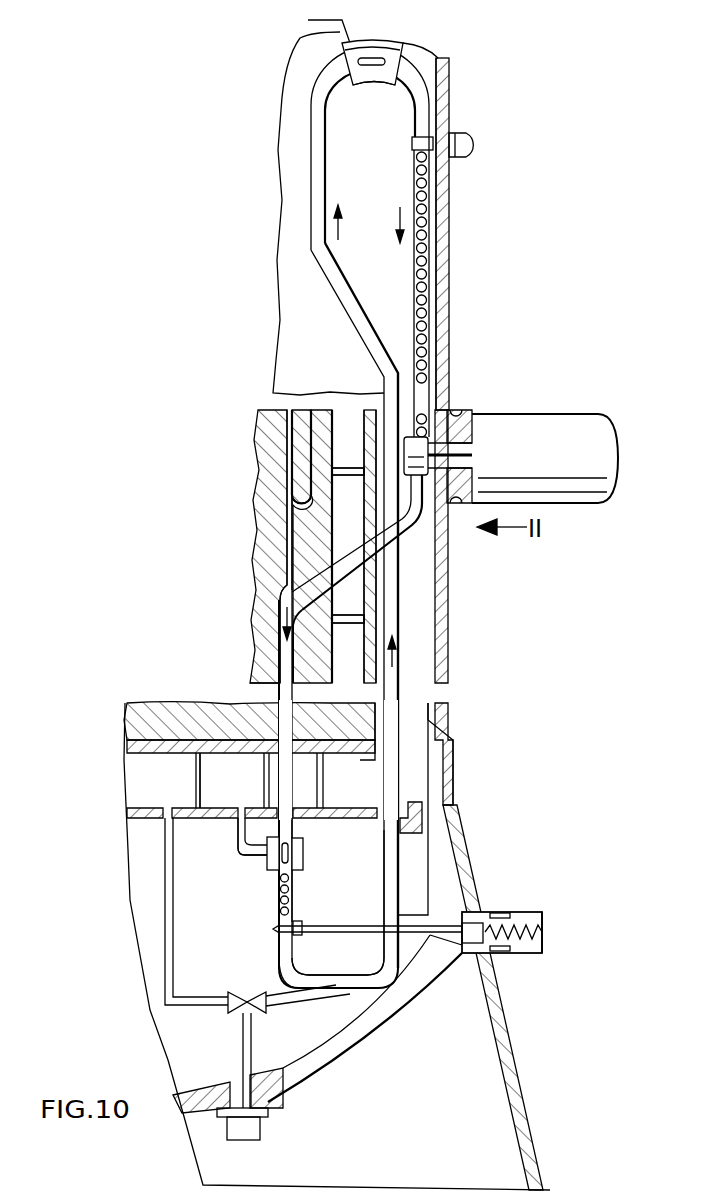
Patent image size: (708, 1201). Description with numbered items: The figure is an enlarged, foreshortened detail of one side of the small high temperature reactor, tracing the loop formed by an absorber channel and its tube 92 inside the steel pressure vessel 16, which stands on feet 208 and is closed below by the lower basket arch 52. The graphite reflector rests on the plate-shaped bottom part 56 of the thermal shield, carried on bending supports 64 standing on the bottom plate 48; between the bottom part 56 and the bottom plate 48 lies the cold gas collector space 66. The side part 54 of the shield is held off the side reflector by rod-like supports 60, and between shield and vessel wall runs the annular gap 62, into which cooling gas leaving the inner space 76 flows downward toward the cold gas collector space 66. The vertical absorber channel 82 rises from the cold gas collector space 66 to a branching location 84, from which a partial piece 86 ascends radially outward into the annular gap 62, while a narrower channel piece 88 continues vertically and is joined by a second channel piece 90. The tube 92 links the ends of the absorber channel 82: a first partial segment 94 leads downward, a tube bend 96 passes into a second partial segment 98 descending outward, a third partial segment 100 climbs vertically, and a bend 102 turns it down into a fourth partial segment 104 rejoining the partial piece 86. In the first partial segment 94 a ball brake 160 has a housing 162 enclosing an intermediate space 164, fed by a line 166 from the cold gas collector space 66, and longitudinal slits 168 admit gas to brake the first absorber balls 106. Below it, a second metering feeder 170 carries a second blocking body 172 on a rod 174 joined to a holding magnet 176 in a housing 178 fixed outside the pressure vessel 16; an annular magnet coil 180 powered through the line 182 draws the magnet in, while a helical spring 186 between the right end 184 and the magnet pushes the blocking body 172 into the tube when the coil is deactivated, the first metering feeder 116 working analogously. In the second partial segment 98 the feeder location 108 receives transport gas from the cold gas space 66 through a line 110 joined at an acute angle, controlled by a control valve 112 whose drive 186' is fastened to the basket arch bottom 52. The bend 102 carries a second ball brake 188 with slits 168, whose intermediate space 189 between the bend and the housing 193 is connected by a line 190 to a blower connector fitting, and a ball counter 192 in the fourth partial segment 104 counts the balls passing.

The pressure vessel 16 is at (450, 196).
The bottom plate 48 is at (127, 813).
The lower basket arch 52 is at (322, 1068).
The side part of the thermal shield 54 is at (365, 530).
The bottom part of the thermal shield 56 is at (128, 745).
The rod-like supports 60 is at (350, 626).
The annular gap 62 is at (448, 635).
The bending supports 64 is at (200, 778).
The cold gas collector space 66 is at (166, 794).
The inner space of the pressure vessel 76 is at (319, 346).
The absorber channel 82 is at (272, 658).
The branching location 84 is at (280, 605).
The partial piece of the absorber channel 86 is at (412, 560).
The channel piece 88 is at (262, 553).
The second channel piece 90 is at (310, 437).
The tube 92 is at (400, 778).
The first partial segment 94 is at (291, 830).
The tube bend 96 is at (280, 968).
The second partial segment 98 is at (313, 975).
The third partial segment 100 is at (313, 160).
The bend 102 is at (327, 83).
The fourth partial segment 104 is at (413, 158).
The first absorber balls 106 is at (280, 900).
The feeder location 108 is at (320, 1000).
The line 110 is at (165, 855).
The control valve 112 is at (235, 1012).
The metering feeder 116 is at (533, 415).
The ball brake 160 is at (296, 874).
The housing 162 is at (303, 858).
The intermediate space 164 is at (276, 862).
The line 166 is at (237, 836).
The slits 168 is at (381, 67).
The second metering feeder 170 is at (365, 922).
The second blocking body 172 is at (275, 930).
The rod 174 is at (393, 925).
The holding magnet 176 is at (472, 945).
The housing 178 is at (540, 912).
The annular magnet coil 180 is at (505, 952).
The line 182 is at (502, 912).
The right end of the housing 184 is at (545, 926).
The helical spring 186 is at (570, 941).
The drive 186' is at (265, 1143).
The second ball brake 188 is at (450, 78).
The intermediate space 189 is at (395, 50).
The line 190 is at (318, 22).
The ball counter 192 is at (475, 143).
The housing 193 is at (358, 87).
The feet 208 is at (500, 1038).